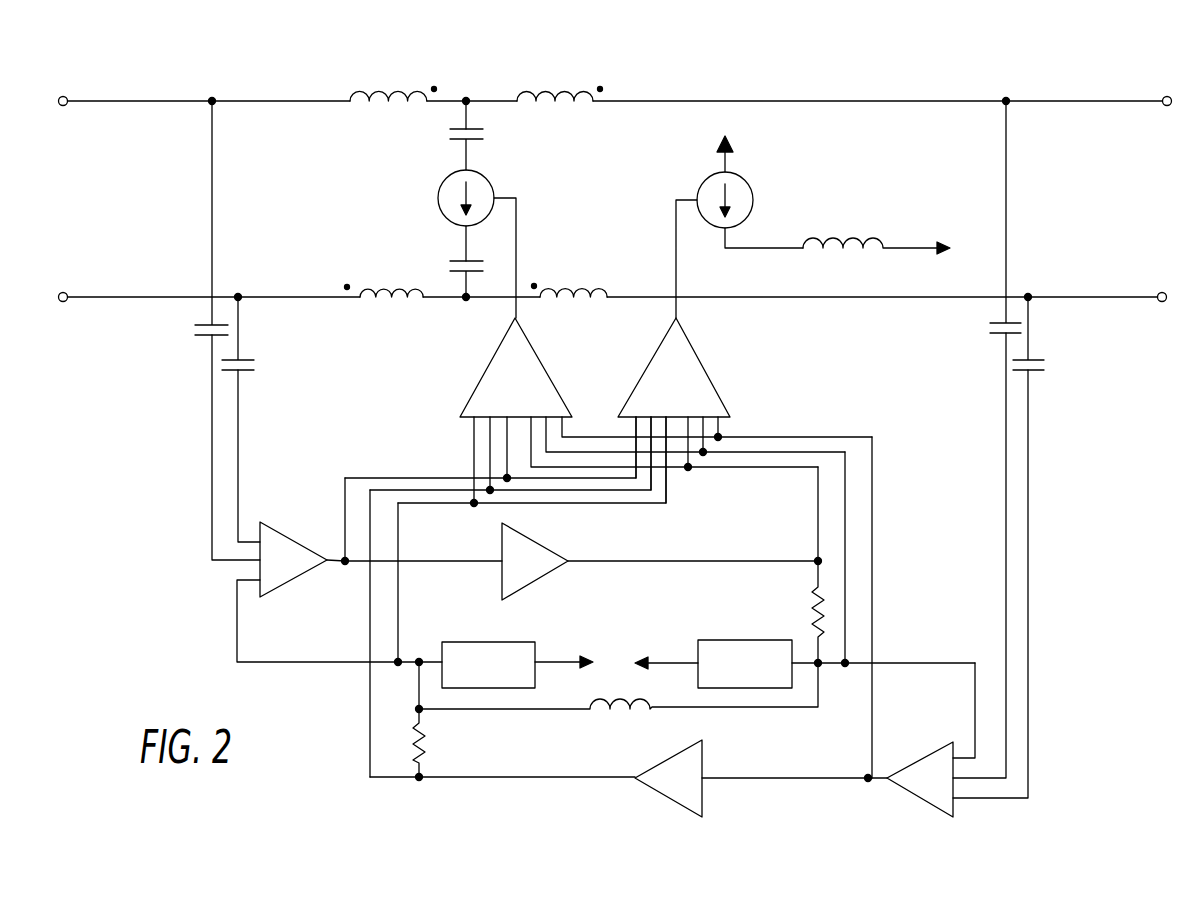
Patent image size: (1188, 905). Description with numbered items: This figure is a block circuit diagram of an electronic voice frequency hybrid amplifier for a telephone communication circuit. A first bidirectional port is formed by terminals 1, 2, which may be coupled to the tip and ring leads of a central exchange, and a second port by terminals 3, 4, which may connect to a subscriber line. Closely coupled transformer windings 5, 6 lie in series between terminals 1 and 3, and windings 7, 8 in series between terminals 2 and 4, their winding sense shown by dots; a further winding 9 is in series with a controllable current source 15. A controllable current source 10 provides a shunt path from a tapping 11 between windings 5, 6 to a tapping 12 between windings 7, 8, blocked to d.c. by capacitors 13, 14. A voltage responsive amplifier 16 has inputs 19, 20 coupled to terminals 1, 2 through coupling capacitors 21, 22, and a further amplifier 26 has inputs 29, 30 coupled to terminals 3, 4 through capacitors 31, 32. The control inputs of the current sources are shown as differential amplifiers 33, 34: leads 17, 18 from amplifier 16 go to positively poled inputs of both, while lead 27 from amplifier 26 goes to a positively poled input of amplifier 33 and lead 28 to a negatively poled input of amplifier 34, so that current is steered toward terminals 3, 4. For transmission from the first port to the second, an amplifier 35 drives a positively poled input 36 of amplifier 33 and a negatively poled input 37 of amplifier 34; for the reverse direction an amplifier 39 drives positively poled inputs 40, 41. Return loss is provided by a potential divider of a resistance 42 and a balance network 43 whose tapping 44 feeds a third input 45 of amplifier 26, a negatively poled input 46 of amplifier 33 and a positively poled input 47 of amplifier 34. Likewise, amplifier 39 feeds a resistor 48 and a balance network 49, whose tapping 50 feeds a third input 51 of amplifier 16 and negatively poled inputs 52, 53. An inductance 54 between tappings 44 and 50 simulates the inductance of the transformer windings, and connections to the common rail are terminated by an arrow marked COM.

The input terminal 1 is at (63, 96).
The input terminal 2 is at (63, 292).
The output terminal 3 is at (1167, 96).
The output terminal 4 is at (1162, 292).
The transformer winding 5 is at (400, 95).
The transformer winding 6 is at (555, 95).
The transformer winding 7 is at (368, 282).
The transformer winding 8 is at (588, 282).
The transformer winding 9 is at (858, 235).
The controllable current source 10 is at (440, 185).
The tapping 11 is at (468, 97).
The tapping 12 is at (462, 302).
The capacitor 13 is at (490, 138).
The capacitor 14 is at (450, 258).
The controllable current source 15 is at (745, 175).
The voltage responsive amplifier 16 is at (290, 580).
The lead 17 is at (480, 456).
The lead 18 is at (632, 440).
The input 19 is at (210, 503).
The input 20 is at (240, 457).
The coupling capacitor 21 is at (195, 333).
The coupling capacitor 22 is at (257, 366).
The amplifier 26 is at (922, 770).
The lead 27 is at (565, 440).
The lead 28 is at (718, 430).
The input 29 is at (1004, 517).
The input 30 is at (1029, 552).
The capacitor 31 is at (985, 332).
The capacitor 32 is at (1048, 360).
The differential amplifier 33 is at (525, 335).
The differential amplifier 34 is at (685, 372).
The amplifier 35 is at (530, 570).
The positively poled input 36 is at (512, 476).
The negatively poled input 37 is at (692, 468).
The amplifier 39 is at (690, 770).
The positively poled input 40 is at (470, 430).
The positively poled input 41 is at (650, 440).
The resistance 42 is at (830, 610).
The balance network 43 is at (709, 656).
The tapping 44 is at (822, 670).
The third input 45 is at (962, 750).
The negatively poled input 46 is at (555, 440).
The positively poled input 47 is at (718, 428).
The resistor 48 is at (412, 738).
The balance network 49 is at (500, 656).
The tapping 50 is at (421, 652).
The third input 51 is at (236, 633).
The negatively poled input 52 is at (475, 440).
The negatively poled input 53 is at (668, 482).
The inductance 54 is at (615, 720).